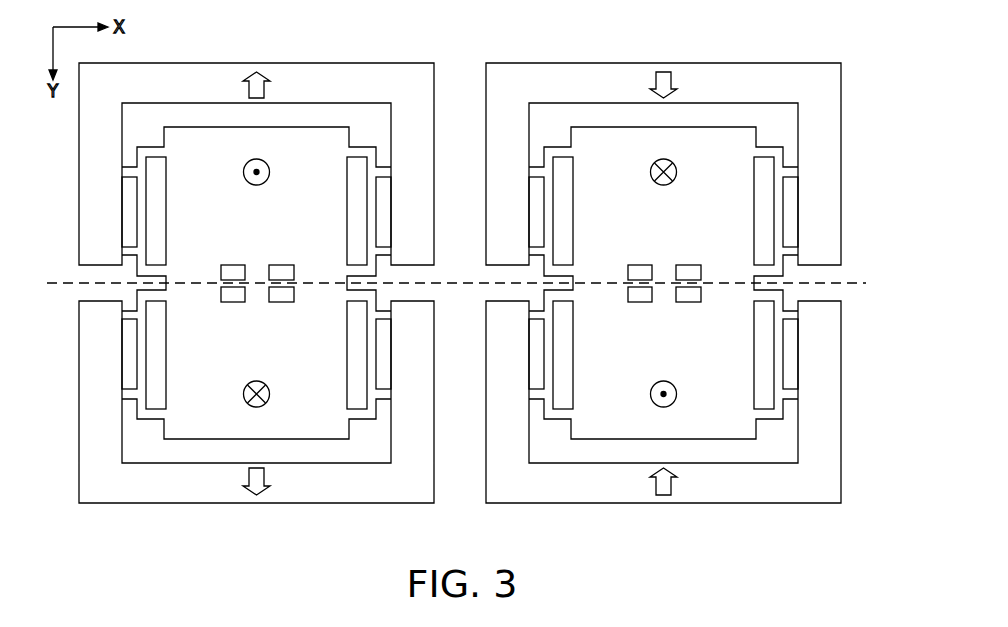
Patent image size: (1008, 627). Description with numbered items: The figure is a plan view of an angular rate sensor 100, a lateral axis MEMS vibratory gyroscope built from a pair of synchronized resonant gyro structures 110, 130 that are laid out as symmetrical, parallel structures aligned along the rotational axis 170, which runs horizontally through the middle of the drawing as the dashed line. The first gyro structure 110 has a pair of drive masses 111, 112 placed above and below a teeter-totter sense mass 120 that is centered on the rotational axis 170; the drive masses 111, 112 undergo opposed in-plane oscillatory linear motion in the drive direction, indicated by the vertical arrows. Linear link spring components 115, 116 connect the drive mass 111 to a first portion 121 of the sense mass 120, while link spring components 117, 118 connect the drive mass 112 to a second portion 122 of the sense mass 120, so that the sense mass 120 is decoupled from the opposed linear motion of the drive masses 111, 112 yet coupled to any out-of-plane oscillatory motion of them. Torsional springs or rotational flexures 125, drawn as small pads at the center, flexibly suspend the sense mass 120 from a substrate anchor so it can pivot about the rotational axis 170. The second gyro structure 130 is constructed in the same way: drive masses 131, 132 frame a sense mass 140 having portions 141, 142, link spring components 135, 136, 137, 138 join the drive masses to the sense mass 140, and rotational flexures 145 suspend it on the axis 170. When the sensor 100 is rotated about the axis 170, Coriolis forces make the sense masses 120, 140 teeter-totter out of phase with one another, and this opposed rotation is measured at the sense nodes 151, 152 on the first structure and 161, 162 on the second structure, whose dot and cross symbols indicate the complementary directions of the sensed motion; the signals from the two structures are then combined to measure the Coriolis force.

The angular rate sensor 100 is at (797, 33).
The first gyro structure 110 is at (80, 503).
The drive mass 111 is at (258, 393).
The drive mass 112 is at (258, 173).
The link spring component 115 is at (140, 355).
The link spring component 116 is at (373, 340).
The link spring component 117 is at (140, 212).
The link spring component 118 is at (373, 190).
The sense mass element 120 is at (164, 439).
The first portion of the sense mass 121 is at (241, 361).
The second portion of the sense mass 122 is at (241, 235).
The torsional springs or rotational flexures 125 is at (277, 283).
The second gyro structure 130 is at (840, 503).
The drive mass 131 is at (663, 393).
The drive mass 132 is at (663, 173).
The link spring component 135 is at (498, 354).
The link spring component 136 is at (828, 354).
The link spring component 137 is at (498, 212).
The link spring component 138 is at (828, 212).
The sense mass element 140 is at (663, 428).
The portion of the sense mass 141 is at (663, 350).
The portion of the sense mass 142 is at (663, 181).
The torsional springs or rotational flexures 145 is at (679, 268).
The sense node 151 is at (244, 393).
The sense node 152 is at (244, 173).
The sense node 161 is at (641, 393).
The sense node 162 is at (641, 171).
The rotational axis 170 is at (67, 280).